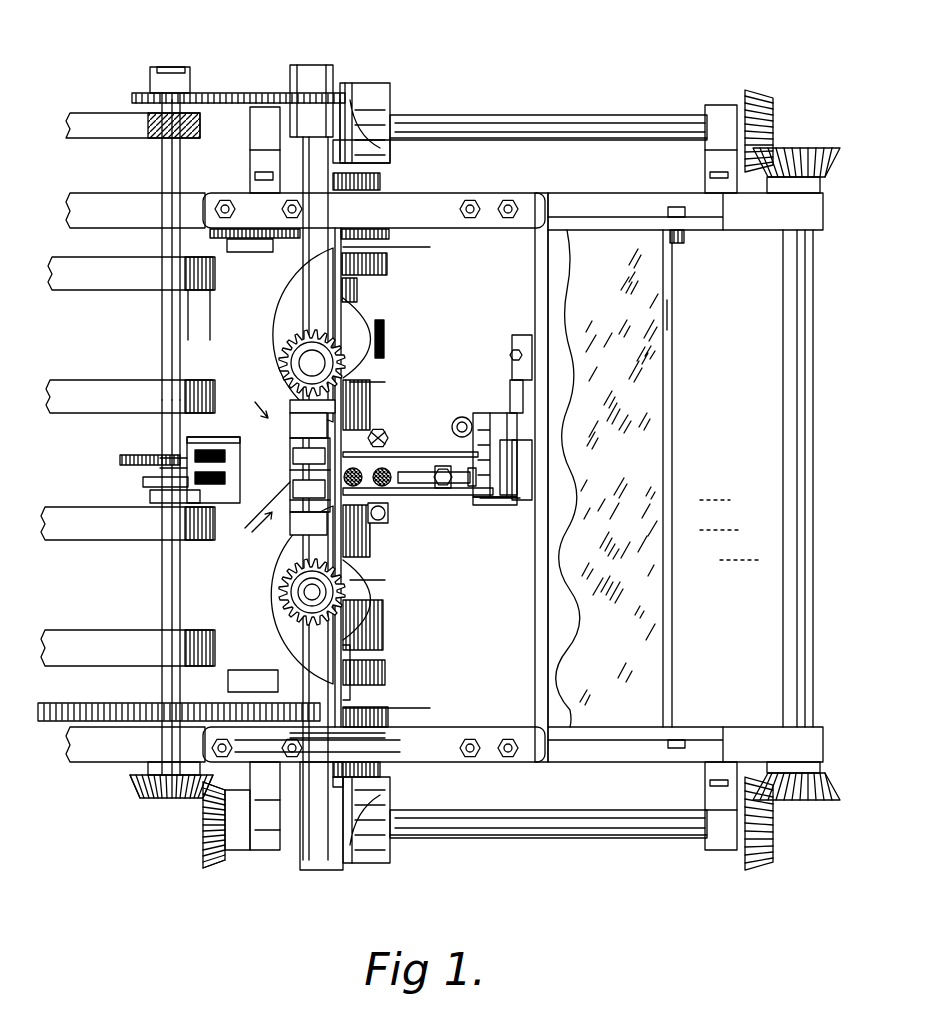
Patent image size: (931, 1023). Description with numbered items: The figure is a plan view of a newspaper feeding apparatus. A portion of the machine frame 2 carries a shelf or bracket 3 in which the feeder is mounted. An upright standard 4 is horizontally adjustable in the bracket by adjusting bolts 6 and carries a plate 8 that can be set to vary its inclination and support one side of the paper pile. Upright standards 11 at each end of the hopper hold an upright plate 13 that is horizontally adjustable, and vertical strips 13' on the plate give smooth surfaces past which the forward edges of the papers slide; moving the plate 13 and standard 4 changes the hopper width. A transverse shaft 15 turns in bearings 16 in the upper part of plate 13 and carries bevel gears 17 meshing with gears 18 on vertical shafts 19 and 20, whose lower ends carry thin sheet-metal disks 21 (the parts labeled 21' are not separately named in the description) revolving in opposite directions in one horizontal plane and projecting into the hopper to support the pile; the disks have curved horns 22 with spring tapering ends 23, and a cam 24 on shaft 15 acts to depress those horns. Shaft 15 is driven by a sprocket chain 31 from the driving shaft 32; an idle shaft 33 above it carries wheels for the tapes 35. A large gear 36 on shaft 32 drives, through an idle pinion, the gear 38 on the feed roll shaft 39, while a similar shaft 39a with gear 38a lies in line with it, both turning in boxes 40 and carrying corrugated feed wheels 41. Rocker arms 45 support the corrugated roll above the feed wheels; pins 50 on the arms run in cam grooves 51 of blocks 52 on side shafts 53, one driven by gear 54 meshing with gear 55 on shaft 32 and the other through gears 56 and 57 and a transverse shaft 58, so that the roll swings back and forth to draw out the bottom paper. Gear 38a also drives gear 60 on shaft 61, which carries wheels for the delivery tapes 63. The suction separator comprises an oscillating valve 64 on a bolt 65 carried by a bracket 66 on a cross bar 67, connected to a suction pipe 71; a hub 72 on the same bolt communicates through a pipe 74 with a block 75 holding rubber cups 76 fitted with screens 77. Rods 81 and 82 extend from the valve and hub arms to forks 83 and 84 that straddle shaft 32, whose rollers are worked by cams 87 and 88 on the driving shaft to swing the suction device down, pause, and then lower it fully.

The frame 2 is at (135, 477).
The shelf or bracket 3 is at (584, 203).
The upright standard 4 is at (676, 282).
The adjusting bolts 6 is at (677, 207).
The plate 8 is at (631, 478).
The upright standards 11 is at (362, 225).
The upright plate 13 is at (391, 670).
The vertical strips 13' is at (379, 477).
The transverse shaft 15 is at (320, 290).
The bearings 16 is at (312, 468).
The bevel gears 17 is at (266, 475).
The bevel gears 18 is at (298, 340).
The vertical shaft 19 is at (298, 592).
The vertical shaft 20 is at (283, 360).
The disks 21 is at (280, 470).
The cam follower 21' is at (410, 469).
The curved horns 22 is at (292, 456).
The tapering ends 23 is at (390, 430).
The cam 24 is at (256, 514).
The sprocket chain 31 is at (216, 96).
The driving shaft 32 is at (165, 157).
The idle shaft 33 is at (165, 322).
The tapes 35 is at (130, 396).
The large gear 36 is at (45, 722).
The gear 38 is at (390, 709).
The gear 38a is at (390, 241).
The feed roll shaft 39 is at (386, 673).
The feed roll shaft 39a is at (388, 262).
The boxes 40 is at (372, 412).
The feed wheels 41 is at (388, 318).
The rocker arms 45 is at (382, 183).
The pins 50 is at (392, 158).
The cam grooves 51 is at (362, 113).
The blocks 52 is at (390, 90).
The shafts 53 is at (532, 120).
The gear 54 is at (215, 862).
The gear 55 is at (150, 800).
The gear 56 is at (750, 90).
The gear 57 is at (805, 148).
The transverse shaft 58 is at (790, 622).
The gear 60 is at (205, 231).
The shaft 61 is at (236, 252).
The tapes 63 is at (185, 340).
The oscillating valve 64 is at (520, 456).
The bolt 65 is at (518, 505).
The bracket 66 is at (522, 424).
The cross bar 67 is at (542, 627).
The suction pipe 71 is at (465, 416).
The hub 72 is at (520, 480).
The pipe 74 is at (482, 499).
The block 75 is at (390, 440).
The cups 76 is at (392, 475).
The screens 77 is at (464, 498).
The rod 81 is at (492, 358).
The rod 82 is at (462, 505).
The fork 83 is at (200, 438).
The fork 84 is at (160, 496).
The cam 87 is at (128, 455).
The cam 88 is at (143, 480).